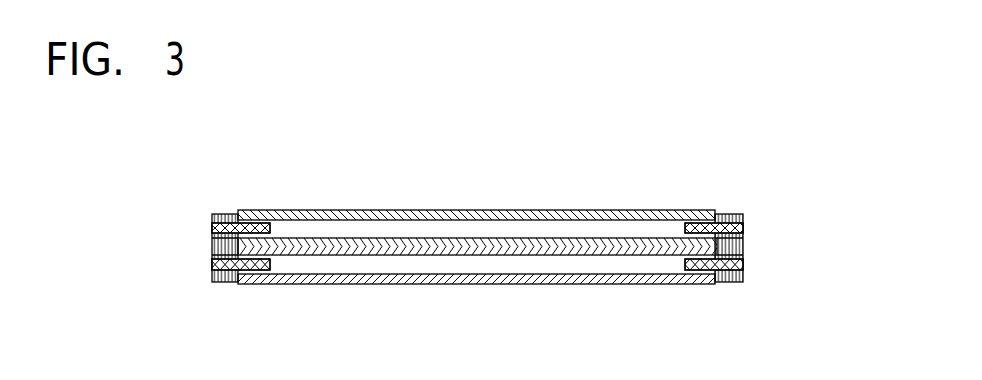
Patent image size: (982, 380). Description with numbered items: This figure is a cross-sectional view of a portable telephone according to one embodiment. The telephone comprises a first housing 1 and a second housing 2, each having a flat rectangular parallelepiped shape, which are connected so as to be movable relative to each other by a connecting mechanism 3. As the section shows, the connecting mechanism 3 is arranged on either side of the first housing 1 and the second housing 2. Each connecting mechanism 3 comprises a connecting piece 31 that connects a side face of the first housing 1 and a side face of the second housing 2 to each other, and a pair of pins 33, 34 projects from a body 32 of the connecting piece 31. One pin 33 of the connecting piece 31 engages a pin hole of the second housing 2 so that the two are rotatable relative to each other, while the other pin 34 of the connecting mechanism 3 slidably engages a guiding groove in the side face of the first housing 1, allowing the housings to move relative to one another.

The first housing 1 is at (556, 284).
The second housing 2 is at (562, 210).
The connecting mechanism 3 is at (481, 211).
The connecting piece 31 is at (134, 219).
The body 32 is at (220, 246).
The pin 33 is at (212, 225).
The pin 34 is at (212, 263).